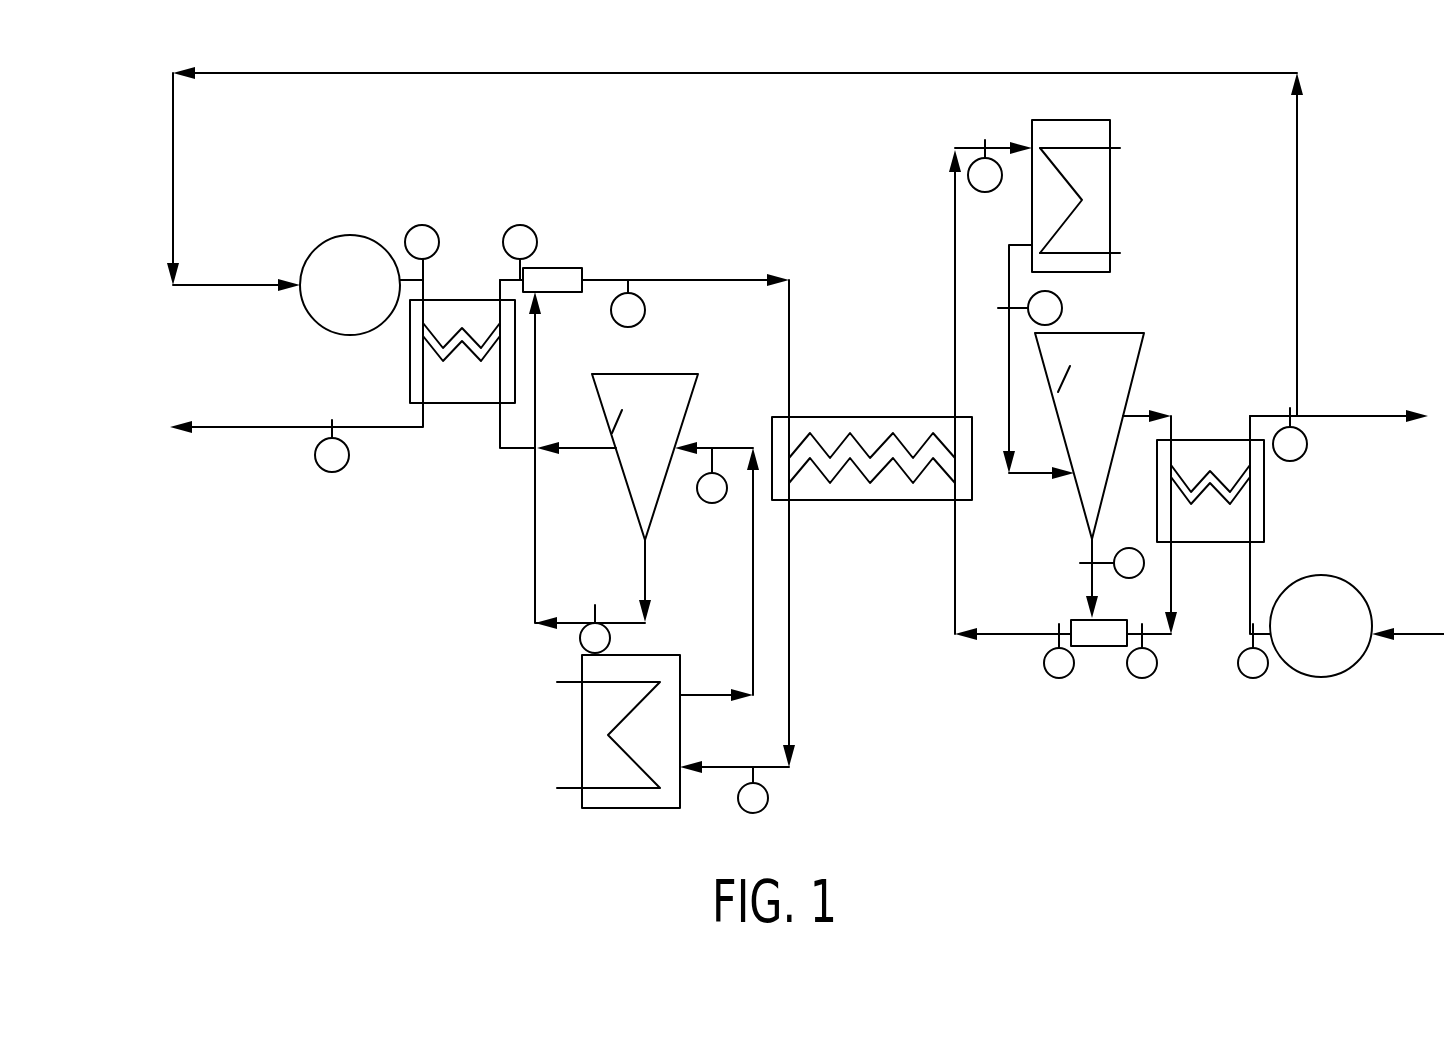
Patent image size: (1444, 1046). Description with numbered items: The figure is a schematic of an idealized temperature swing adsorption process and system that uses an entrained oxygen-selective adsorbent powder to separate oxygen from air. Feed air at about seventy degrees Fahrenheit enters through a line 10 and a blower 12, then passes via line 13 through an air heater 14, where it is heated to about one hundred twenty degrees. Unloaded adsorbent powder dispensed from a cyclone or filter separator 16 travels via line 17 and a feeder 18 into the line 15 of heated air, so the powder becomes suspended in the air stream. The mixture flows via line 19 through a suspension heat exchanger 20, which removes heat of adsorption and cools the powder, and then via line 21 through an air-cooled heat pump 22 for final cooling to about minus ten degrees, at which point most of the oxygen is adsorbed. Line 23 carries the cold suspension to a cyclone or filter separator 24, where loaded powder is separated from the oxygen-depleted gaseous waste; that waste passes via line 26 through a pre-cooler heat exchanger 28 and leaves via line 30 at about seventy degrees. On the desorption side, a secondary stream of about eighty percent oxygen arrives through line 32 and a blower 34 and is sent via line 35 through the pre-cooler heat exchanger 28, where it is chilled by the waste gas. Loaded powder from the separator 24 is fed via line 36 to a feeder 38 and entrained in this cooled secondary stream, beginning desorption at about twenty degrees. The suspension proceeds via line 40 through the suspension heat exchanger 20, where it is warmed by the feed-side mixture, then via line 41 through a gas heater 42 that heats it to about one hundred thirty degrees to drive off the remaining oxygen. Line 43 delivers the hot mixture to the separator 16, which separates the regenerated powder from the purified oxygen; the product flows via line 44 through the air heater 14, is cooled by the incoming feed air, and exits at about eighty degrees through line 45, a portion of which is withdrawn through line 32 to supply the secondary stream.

The line 10 is at (1396, 612).
The blower 12 is at (1322, 575).
The line 13 is at (1252, 567).
The air heater 14 is at (1266, 496).
The line 15 is at (1163, 646).
The cyclone or filter separator 16 is at (1124, 333).
The line 17 is at (1094, 548).
The feeder 18 is at (1052, 622).
The line 19 is at (955, 530).
The suspension heat exchanger 20 is at (848, 417).
The line 21 is at (790, 697).
The air-cooled heat pump 22 is at (680, 735).
The line 23 is at (753, 545).
The cyclone or filter separator 24 is at (680, 373).
The line 26 is at (528, 449).
The pre-cooler heat exchanger 28 is at (410, 368).
The line 30 is at (305, 430).
The line 32 is at (260, 288).
The blower 34 is at (342, 236).
The line 35 is at (426, 284).
The line 36 is at (540, 530).
The feeder 38 is at (566, 270).
The line 40 is at (790, 300).
The line 41 is at (975, 148).
The gas heater 42 is at (1112, 132).
The line 43 is at (1026, 472).
The line 44 is at (1173, 415).
The line 45 is at (1312, 416).